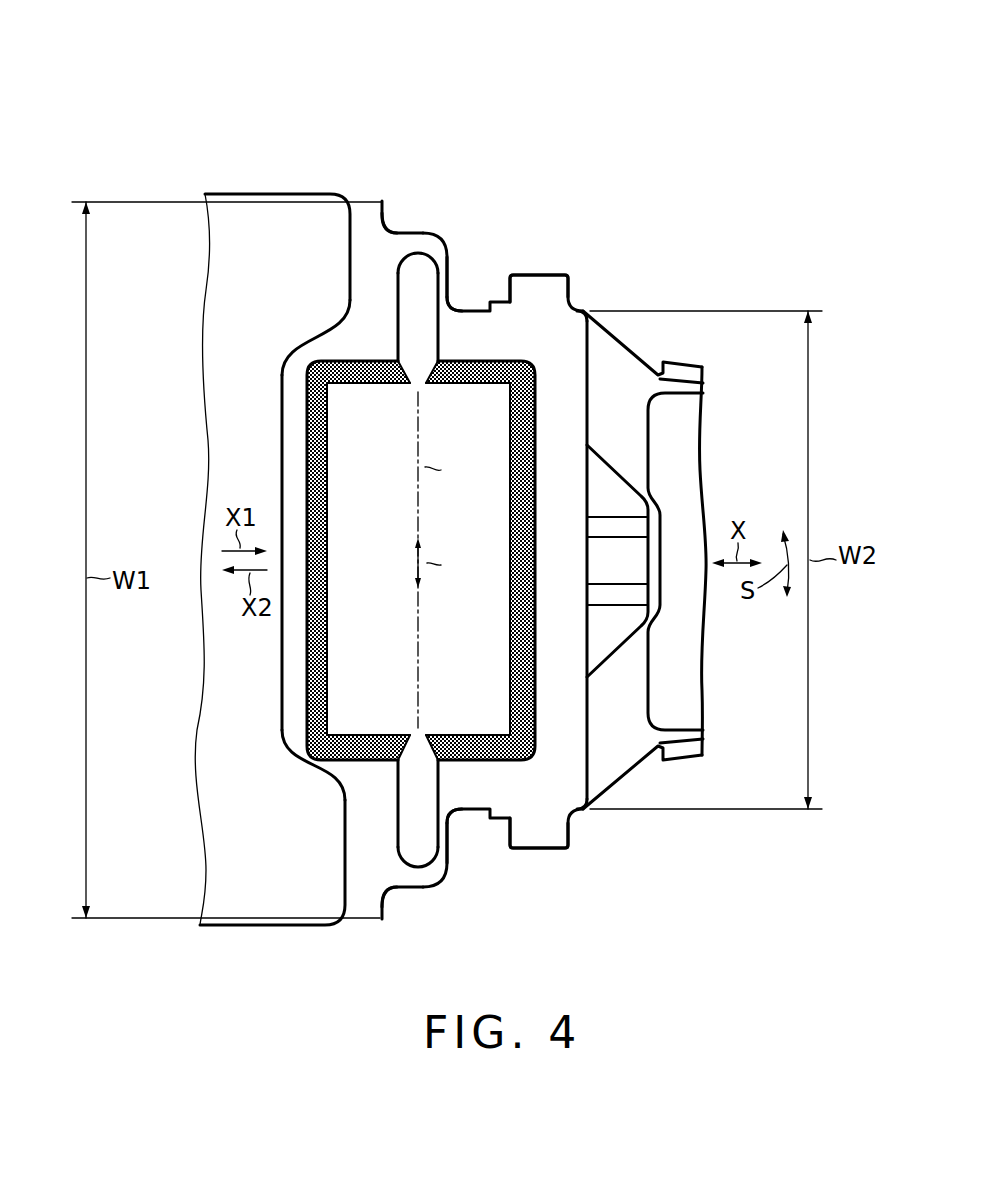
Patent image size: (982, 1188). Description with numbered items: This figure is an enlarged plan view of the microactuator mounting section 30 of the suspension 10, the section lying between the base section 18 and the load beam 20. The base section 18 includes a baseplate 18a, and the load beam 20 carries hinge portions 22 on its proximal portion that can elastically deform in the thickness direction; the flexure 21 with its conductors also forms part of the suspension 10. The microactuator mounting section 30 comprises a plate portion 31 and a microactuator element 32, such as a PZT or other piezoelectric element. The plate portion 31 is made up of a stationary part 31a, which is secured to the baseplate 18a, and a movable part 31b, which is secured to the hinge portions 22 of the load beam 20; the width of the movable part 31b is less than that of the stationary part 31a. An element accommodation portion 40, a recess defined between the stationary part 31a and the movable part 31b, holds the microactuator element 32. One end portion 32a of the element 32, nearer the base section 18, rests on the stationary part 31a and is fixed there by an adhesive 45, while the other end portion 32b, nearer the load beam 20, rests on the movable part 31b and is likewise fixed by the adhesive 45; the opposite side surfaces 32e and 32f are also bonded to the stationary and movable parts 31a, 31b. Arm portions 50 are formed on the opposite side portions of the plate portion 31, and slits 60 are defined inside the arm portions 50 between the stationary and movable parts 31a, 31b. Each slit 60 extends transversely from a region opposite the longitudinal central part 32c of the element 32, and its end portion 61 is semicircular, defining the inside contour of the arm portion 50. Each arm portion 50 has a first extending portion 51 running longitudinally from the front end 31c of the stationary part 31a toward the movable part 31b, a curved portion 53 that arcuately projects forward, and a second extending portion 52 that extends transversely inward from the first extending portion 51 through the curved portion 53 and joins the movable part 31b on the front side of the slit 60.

The suspension 10 is at (649, 893).
The base section 18 is at (219, 189).
The baseplate 18a is at (228, 310).
The load beam 20 is at (700, 362).
The flexure 21 is at (618, 517).
The hinge portions 22 is at (612, 372).
The microactuator mounting section 30 is at (489, 95).
The plate portion 31 is at (364, 230).
The stationary part 31a is at (337, 785).
The movable part 31b is at (572, 718).
The front end 31c is at (390, 217).
The microactuator element 32 is at (372, 680).
The one end portion 32a is at (332, 627).
The other end portion 32b is at (492, 610).
The longitudinal central part 32c is at (428, 385).
The side surface 32e is at (452, 374).
The side surface 32f is at (450, 745).
The element accommodation portion 40 is at (298, 387).
The adhesive 45 is at (318, 442).
The arm portions 50 is at (428, 246).
The first extending portion 51 is at (408, 231).
The second extending portion 52 is at (453, 287).
The curved portion 53 is at (450, 252).
The slits 60 is at (400, 327).
The end portion 61 is at (408, 262).